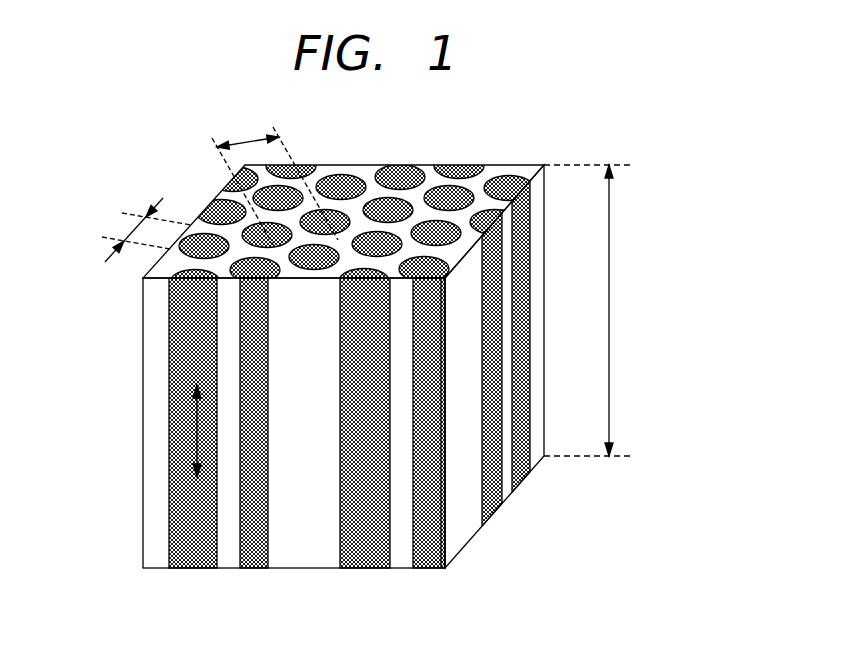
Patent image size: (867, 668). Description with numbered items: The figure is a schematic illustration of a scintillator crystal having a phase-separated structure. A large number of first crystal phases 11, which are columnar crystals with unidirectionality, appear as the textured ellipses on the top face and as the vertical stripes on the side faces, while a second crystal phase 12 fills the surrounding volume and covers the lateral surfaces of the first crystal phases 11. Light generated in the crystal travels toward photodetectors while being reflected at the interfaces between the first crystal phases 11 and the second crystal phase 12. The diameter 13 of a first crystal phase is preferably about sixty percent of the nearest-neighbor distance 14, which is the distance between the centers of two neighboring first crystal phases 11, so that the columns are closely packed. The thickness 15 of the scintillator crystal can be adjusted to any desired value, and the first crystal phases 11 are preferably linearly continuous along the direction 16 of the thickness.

The first crystal phases 11 is at (345, 176).
The second crystal phase 12 is at (413, 197).
The diameter of the first crystal phase 13 is at (140, 225).
The nearest-neighbor distance of the first crystal phases 14 is at (218, 146).
The thickness of the scintillator crystal 15 is at (612, 317).
The direction of the thickness 16 is at (193, 428).